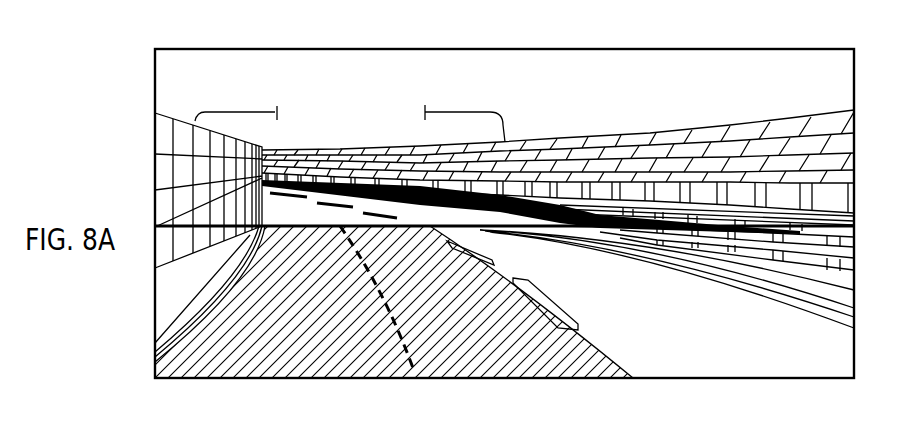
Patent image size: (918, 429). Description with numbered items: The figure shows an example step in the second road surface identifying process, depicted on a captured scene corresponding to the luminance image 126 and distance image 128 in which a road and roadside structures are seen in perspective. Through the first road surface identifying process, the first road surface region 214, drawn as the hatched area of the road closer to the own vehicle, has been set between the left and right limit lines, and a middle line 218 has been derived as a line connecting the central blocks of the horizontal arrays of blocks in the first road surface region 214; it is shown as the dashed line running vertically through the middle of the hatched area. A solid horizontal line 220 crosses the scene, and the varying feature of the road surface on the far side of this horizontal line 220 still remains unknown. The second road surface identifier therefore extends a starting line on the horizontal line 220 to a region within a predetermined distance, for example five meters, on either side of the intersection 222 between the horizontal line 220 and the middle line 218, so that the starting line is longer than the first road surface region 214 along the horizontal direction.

The luminance image 126 is at (512, 190).
The distance image 128 is at (797, 33).
The first road surface region 214 is at (358, 313).
The middle line 218 is at (412, 370).
The horizontal line 220 is at (203, 222).
The intersection 222 is at (344, 224).